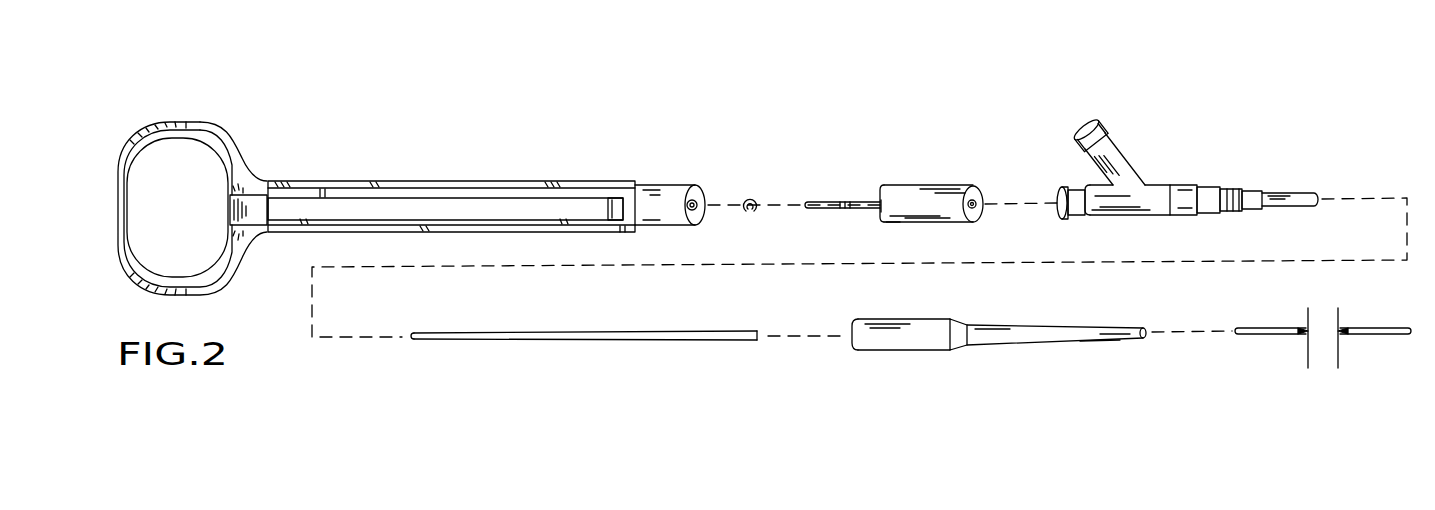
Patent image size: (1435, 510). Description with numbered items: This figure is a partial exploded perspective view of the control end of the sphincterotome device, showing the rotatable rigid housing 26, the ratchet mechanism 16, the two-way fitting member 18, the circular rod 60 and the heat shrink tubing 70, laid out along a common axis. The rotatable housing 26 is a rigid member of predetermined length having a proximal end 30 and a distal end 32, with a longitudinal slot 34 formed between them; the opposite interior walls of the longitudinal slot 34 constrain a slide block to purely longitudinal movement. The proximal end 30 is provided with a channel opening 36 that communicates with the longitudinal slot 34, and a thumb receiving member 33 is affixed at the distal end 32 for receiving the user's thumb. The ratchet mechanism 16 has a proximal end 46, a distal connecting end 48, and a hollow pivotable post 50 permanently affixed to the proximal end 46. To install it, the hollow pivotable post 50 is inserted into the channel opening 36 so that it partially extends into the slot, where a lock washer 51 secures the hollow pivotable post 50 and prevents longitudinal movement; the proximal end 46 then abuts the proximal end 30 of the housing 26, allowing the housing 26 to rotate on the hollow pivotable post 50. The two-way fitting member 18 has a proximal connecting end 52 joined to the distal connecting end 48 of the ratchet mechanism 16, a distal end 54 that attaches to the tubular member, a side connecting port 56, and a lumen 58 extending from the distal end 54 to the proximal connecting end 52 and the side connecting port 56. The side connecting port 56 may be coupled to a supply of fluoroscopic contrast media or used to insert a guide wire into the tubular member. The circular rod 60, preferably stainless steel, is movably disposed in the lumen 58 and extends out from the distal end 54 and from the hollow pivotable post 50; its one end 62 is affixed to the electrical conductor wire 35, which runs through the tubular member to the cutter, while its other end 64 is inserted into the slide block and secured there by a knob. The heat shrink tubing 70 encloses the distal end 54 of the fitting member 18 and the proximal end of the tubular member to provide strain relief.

The ratchet mechanism 16 is at (925, 172).
The two-way fitting member 18 is at (1175, 136).
The rotatable rigid housing 26 is at (352, 163).
The proximal end 30 is at (662, 190).
The distal end 32 is at (230, 168).
The thumb receiving member 33 is at (185, 137).
The longitudinal slot 34 is at (440, 197).
The electrical conductor wire 35 is at (1323, 372).
The channel opening 36 is at (705, 210).
The proximal end 46 is at (881, 212).
The distal connecting end 48 is at (988, 208).
The hollow pivotable post 50 is at (820, 204).
The lock washer 51 is at (748, 186).
The proximal connecting end 52 is at (1058, 190).
The distal end 54 is at (1298, 193).
The side connecting port 56 is at (1100, 130).
The lumen 58 is at (1205, 185).
The circular rod 60 is at (618, 340).
The one end 62 is at (758, 341).
The other end 64 is at (414, 341).
The heat shrink tubing 70 is at (985, 334).